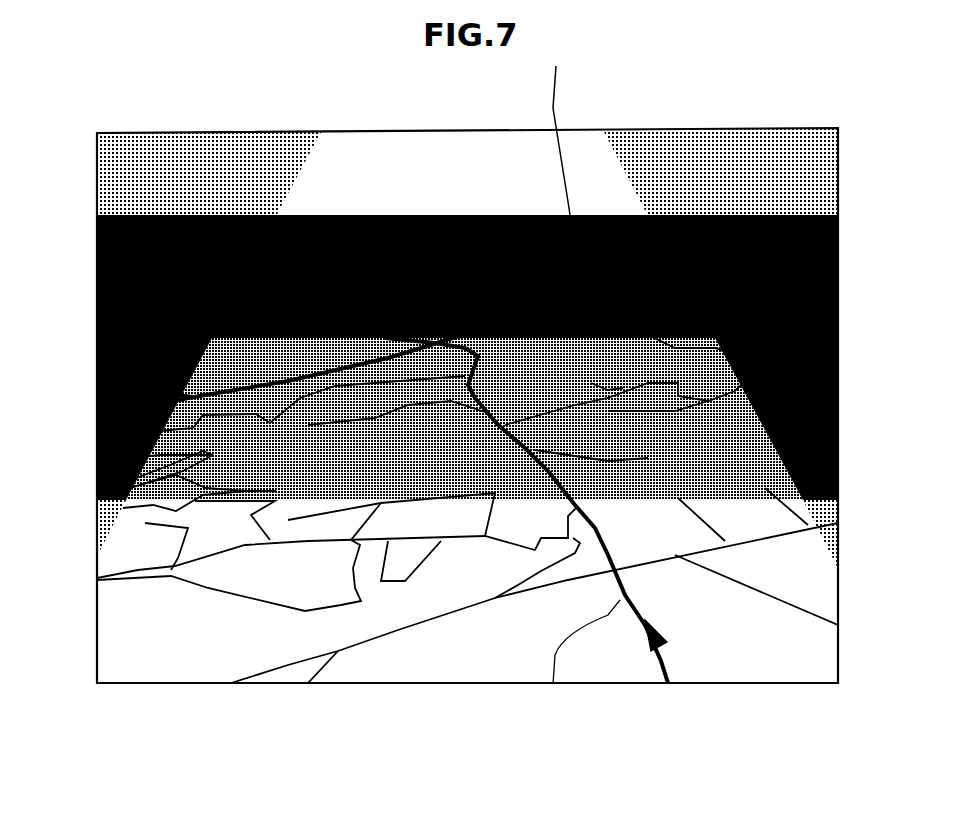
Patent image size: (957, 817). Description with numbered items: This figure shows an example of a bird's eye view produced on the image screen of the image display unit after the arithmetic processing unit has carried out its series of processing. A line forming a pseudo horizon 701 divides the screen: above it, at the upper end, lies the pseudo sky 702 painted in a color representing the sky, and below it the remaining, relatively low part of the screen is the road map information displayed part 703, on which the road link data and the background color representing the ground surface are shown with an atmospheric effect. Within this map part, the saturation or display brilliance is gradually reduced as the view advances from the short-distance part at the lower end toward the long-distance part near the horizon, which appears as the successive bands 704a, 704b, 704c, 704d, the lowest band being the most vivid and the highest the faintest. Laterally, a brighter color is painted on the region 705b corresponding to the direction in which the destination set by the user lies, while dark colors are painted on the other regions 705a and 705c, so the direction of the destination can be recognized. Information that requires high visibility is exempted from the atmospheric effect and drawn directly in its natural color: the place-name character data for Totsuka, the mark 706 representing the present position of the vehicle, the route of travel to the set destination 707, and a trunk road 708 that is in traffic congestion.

The pseudo horizon 701 is at (752, 222).
The pseudo sky 702 is at (830, 120).
The road map information displayed part 703 is at (833, 675).
The short-distance region 704a is at (87, 493).
The second-distance region 704b is at (87, 333).
The third-distance region 704c is at (87, 240).
The long-distance region 704d is at (87, 211).
The left side region 705a is at (318, 120).
The destination direction region 705b is at (595, 117).
The right side region 705c is at (830, 116).
The present position mark 706 is at (637, 633).
The route of travel to the set destination 707 is at (575, 671).
The trunk road 708 is at (563, 189).